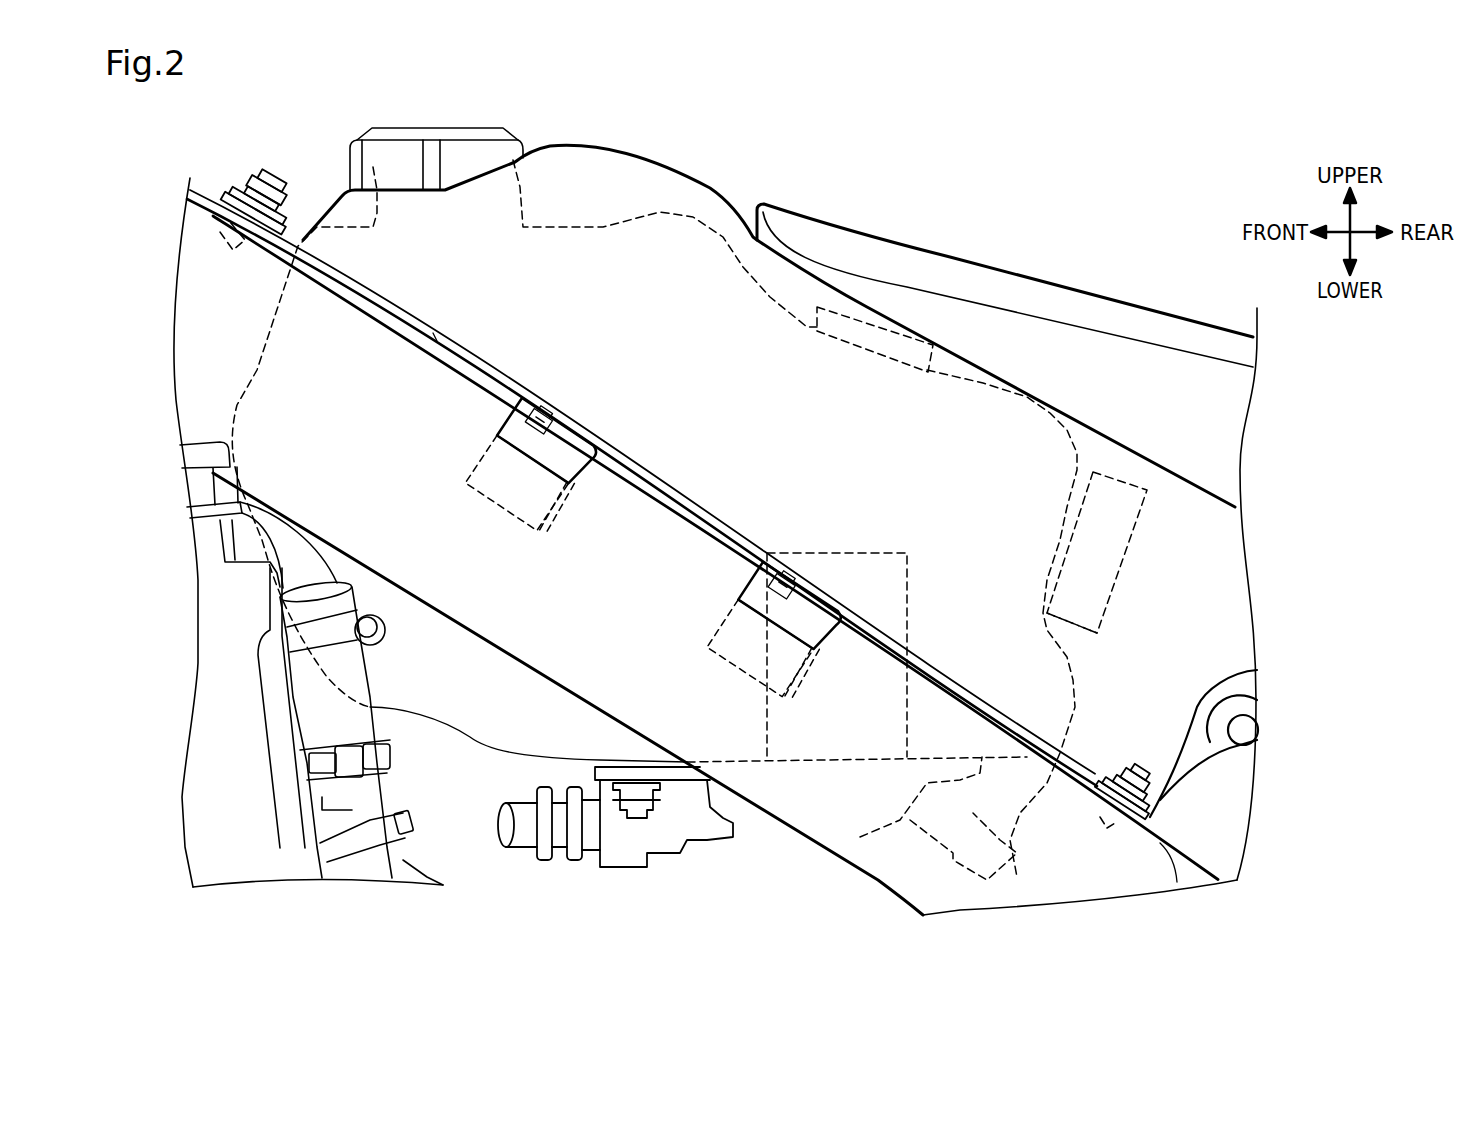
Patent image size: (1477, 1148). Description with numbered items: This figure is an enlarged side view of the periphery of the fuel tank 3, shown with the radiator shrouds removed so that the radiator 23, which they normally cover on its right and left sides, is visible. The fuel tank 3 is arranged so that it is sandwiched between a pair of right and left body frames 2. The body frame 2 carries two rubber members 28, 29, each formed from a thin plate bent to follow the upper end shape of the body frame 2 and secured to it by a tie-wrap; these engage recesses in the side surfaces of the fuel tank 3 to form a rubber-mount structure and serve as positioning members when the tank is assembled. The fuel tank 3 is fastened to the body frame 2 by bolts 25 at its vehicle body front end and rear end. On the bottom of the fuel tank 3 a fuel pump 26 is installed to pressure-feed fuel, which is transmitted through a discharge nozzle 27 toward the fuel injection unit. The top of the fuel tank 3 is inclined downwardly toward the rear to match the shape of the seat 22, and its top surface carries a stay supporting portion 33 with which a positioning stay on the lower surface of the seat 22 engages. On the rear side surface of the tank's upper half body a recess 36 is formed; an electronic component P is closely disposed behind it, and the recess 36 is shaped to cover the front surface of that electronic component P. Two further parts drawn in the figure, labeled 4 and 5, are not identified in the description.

The body frame 2 is at (495, 392).
The fuel tank 3 is at (985, 387).
The tank body 4 is at (615, 190).
The filler cap 5 is at (463, 137).
The seat 22 is at (1177, 330).
The radiator 23 is at (213, 664).
The bolt 25 is at (281, 172).
The fuel pump 26 is at (907, 698).
The discharge nozzle 27 is at (623, 850).
The rubber member 28 is at (573, 440).
The rubber member 29 is at (888, 330).
The stay supporting portion 33 is at (773, 575).
The recess 36 is at (1063, 513).
The electronic component P is at (1120, 578).